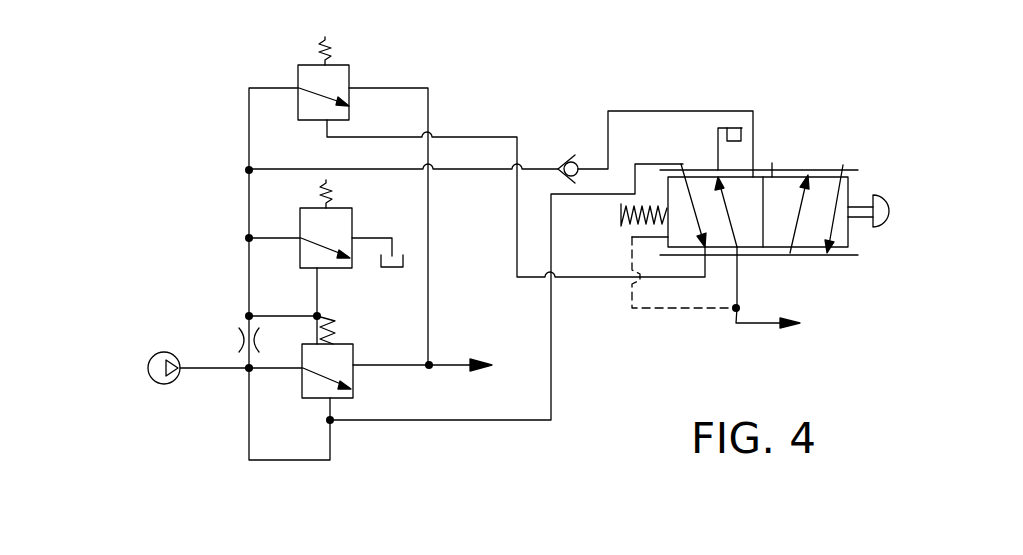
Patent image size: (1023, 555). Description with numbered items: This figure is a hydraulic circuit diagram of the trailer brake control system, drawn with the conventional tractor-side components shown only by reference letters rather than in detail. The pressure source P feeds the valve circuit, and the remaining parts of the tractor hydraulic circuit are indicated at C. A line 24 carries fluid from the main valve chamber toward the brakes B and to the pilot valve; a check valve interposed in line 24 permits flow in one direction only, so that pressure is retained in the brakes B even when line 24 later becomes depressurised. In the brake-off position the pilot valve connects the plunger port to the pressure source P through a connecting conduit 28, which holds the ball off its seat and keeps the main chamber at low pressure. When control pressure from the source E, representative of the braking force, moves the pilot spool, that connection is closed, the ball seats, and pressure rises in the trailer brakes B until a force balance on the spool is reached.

The line 24 is at (403, 157).
The connecting conduit 28 is at (516, 194).
The pressure source P is at (164, 380).
The other parts of the hydraulic circuit on the tractor C is at (427, 355).
The brakes B is at (776, 287).
The source of control pressure E is at (868, 183).